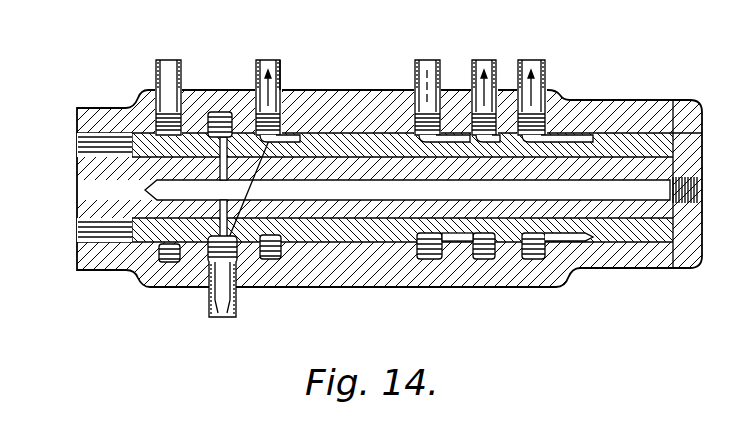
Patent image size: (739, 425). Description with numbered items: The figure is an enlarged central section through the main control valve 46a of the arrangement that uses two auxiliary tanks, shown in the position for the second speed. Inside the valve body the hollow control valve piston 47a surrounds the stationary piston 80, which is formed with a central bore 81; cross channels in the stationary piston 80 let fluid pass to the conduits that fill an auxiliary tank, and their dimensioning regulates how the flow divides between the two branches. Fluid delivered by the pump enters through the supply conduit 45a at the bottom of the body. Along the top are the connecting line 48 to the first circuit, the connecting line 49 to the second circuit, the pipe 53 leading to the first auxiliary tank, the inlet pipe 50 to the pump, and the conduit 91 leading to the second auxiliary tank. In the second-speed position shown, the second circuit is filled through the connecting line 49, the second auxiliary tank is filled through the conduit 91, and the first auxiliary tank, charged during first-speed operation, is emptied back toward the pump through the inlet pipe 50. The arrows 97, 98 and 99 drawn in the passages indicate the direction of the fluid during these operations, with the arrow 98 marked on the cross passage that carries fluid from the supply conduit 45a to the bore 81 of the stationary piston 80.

The supply conduit 45a is at (222, 313).
The main control valve 46a is at (372, 90).
The control valve piston 47a is at (113, 272).
The connecting line to circuit 1 48 is at (172, 58).
The connecting line to circuit 2 49 is at (272, 58).
The inlet pipe to the pump 50 is at (481, 57).
The pipe to auxiliary tank 53 is at (429, 58).
The stationary piston 80 is at (78, 178).
The bore 81 is at (560, 190).
The conduit to auxiliary tank 90 91 is at (533, 58).
The arrow 97 is at (282, 84).
The arrow 98 is at (546, 86).
The arrow 99 is at (472, 76).